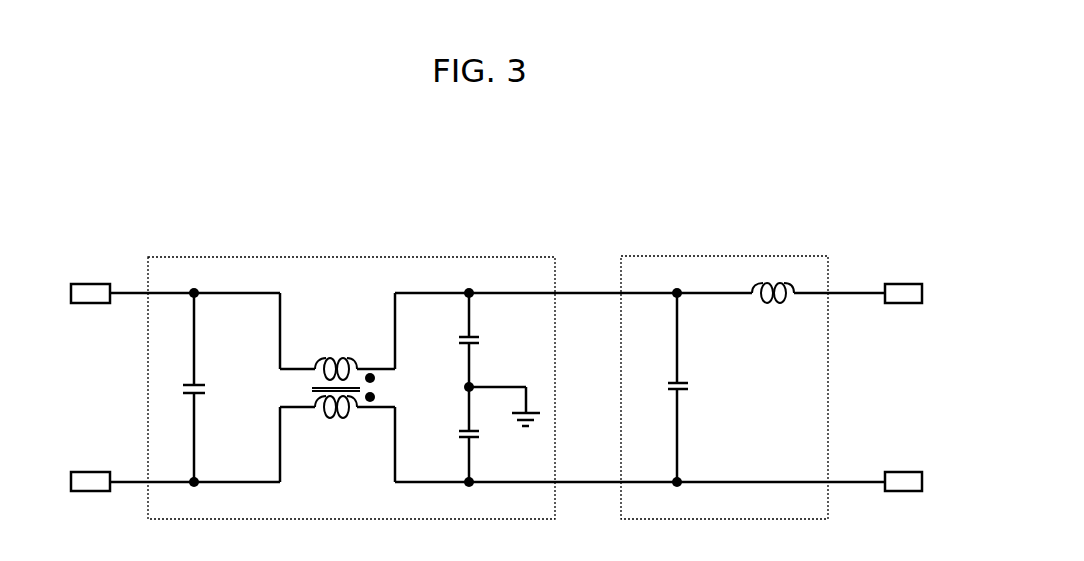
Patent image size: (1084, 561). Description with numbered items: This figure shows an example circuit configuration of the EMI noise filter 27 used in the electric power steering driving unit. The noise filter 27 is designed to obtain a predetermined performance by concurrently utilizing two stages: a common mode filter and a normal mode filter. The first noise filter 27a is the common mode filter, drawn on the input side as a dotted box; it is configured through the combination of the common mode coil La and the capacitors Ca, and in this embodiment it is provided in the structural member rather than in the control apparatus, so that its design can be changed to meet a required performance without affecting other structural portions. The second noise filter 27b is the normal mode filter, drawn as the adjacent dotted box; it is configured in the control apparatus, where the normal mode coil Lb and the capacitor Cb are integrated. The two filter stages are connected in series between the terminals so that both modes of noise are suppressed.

The noise filter 27 is at (421, 165).
The first noise filter 27a is at (502, 258).
The second noise filter 27b is at (830, 256).
The capacitor Ca is at (203, 386).
The capacitor Cb is at (687, 390).
The common mode coil La is at (333, 358).
The normal mode coil Lb is at (760, 302).